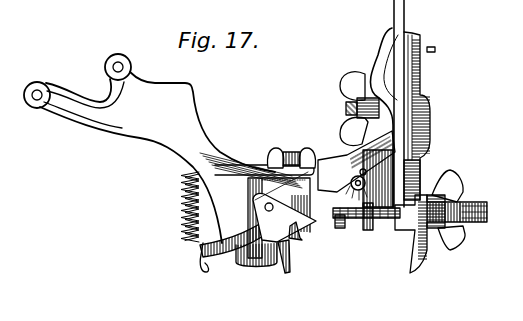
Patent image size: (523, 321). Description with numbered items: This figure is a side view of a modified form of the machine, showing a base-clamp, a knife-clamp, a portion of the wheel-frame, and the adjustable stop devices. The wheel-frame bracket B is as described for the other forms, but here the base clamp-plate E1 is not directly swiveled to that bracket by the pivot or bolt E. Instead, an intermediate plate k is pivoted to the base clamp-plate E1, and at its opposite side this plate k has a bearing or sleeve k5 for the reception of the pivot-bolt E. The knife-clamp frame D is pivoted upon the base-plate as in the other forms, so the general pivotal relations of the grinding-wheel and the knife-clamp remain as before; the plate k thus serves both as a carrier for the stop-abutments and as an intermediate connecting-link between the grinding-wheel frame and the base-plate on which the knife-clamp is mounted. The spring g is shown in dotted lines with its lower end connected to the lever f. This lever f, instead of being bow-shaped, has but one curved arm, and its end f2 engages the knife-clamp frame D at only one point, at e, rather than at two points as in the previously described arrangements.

The wheel-frame bracket B is at (163, 148).
The spring g is at (180, 207).
The lever f is at (207, 260).
The pivot-bolt E is at (268, 266).
The bearing or sleeve k5 is at (252, 201).
The end of lever f2 is at (316, 224).
The plate k is at (281, 186).
The knife-clamp frame D is at (356, 161).
The engagement point e is at (338, 184).
The base clamp-plate E1 is at (363, 211).